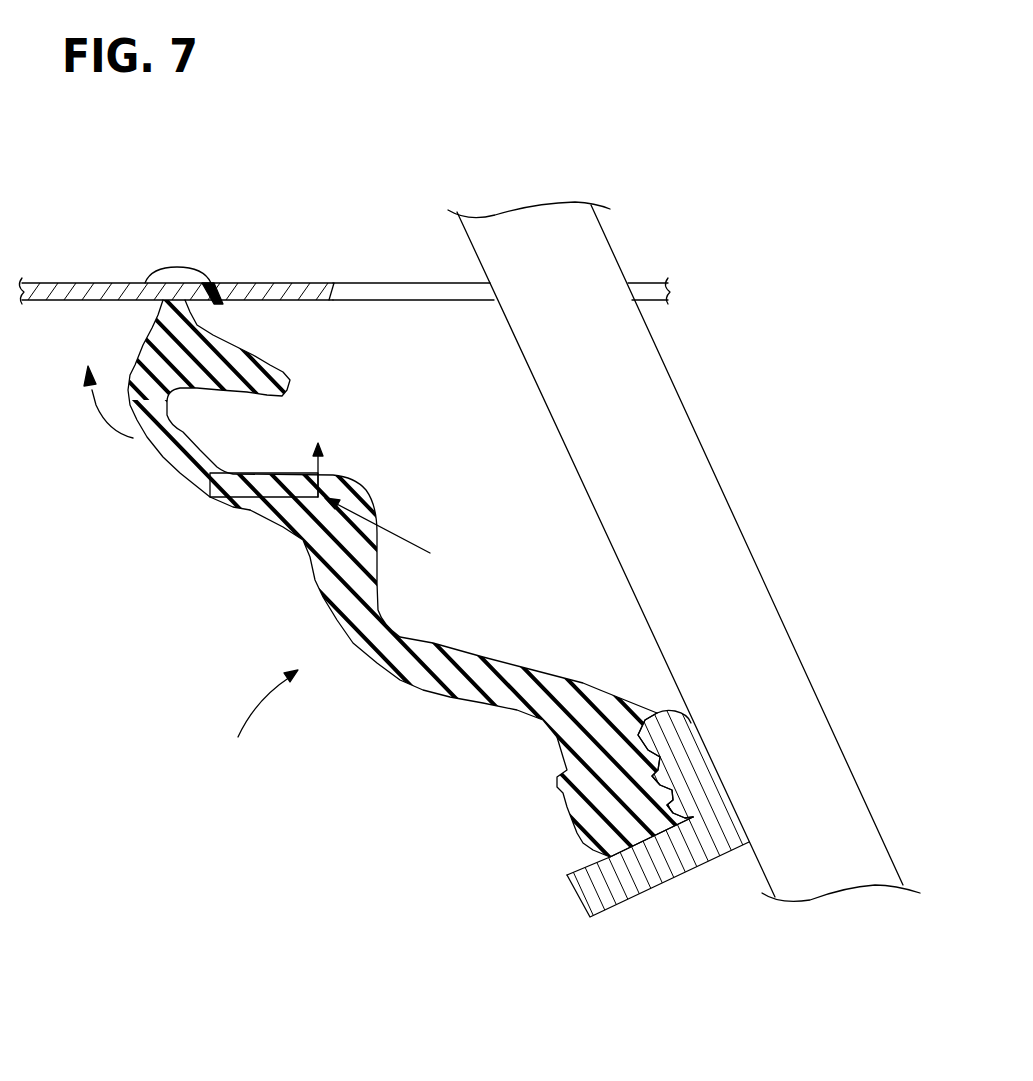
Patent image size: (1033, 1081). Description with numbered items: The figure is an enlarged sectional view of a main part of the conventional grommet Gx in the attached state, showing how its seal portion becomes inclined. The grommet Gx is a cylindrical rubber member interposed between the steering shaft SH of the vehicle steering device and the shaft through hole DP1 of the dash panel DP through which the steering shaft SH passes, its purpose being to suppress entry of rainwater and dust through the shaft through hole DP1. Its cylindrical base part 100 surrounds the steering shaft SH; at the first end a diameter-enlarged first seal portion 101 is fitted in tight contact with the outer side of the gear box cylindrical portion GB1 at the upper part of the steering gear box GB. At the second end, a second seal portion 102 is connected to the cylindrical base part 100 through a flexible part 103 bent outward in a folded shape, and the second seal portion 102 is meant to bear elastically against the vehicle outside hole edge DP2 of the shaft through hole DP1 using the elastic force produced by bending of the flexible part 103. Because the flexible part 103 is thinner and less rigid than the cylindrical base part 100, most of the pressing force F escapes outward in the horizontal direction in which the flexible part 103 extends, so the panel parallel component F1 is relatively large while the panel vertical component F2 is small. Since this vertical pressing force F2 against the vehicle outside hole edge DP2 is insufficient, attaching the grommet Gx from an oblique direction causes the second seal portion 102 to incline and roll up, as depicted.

The cylindrical base part 100 is at (516, 540).
The first seal portion 101 is at (593, 783).
The second seal portion 102 is at (170, 302).
The flexible part 103 is at (177, 457).
The dash panel DP is at (337, 282).
The shaft through hole DP1 is at (343, 281).
The vehicle outside hole edge DP2 is at (50, 303).
The steering shaft SH is at (532, 233).
The steering gear box GB is at (659, 780).
The gear box cylindrical portion GB1 is at (650, 710).
The pressing force F is at (383, 528).
The panel parallel component F1 is at (248, 487).
The panel vertical component F2 is at (322, 458).
The conventional grommet Gx is at (236, 757).